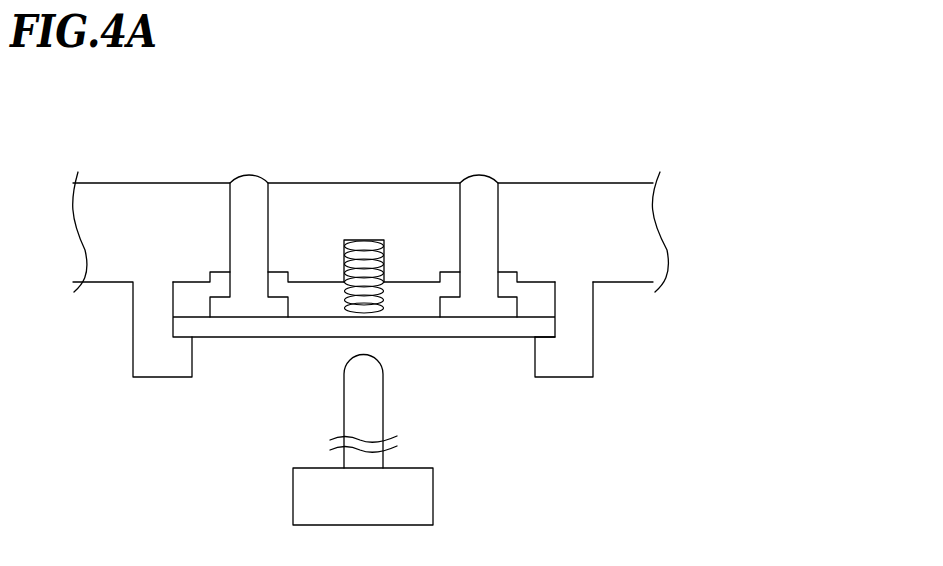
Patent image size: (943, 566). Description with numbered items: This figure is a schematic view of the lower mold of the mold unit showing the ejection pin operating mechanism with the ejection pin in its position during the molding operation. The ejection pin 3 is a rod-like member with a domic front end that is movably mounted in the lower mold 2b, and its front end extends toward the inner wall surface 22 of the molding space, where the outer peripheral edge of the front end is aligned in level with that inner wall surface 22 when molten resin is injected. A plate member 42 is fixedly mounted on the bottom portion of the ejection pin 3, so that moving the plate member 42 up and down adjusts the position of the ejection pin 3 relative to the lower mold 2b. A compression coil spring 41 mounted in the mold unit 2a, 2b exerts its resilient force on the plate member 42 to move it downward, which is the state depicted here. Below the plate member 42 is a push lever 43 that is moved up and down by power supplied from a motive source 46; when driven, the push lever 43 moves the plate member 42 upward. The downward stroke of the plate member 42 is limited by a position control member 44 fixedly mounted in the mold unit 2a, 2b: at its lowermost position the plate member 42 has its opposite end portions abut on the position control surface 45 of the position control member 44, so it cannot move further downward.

The inner wall surface 22 is at (130, 183).
The mold unit 2a is at (417, 243).
The lower mold 2b is at (417, 243).
The ejection pin 3 is at (478, 181).
The compression coil spring 41 is at (352, 240).
The plate member 42 is at (235, 337).
The push lever 43 is at (373, 405).
The position control member 44 is at (587, 333).
The position control surface 45 is at (543, 337).
The motive source 46 is at (427, 493).